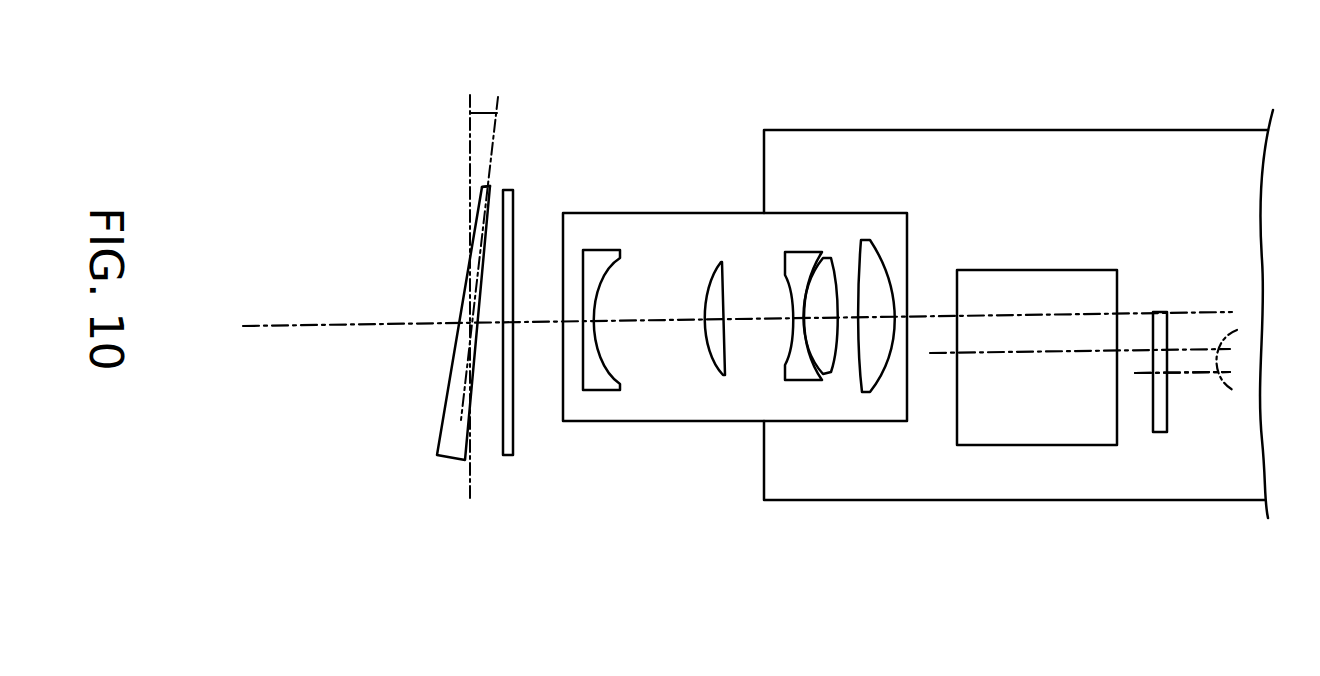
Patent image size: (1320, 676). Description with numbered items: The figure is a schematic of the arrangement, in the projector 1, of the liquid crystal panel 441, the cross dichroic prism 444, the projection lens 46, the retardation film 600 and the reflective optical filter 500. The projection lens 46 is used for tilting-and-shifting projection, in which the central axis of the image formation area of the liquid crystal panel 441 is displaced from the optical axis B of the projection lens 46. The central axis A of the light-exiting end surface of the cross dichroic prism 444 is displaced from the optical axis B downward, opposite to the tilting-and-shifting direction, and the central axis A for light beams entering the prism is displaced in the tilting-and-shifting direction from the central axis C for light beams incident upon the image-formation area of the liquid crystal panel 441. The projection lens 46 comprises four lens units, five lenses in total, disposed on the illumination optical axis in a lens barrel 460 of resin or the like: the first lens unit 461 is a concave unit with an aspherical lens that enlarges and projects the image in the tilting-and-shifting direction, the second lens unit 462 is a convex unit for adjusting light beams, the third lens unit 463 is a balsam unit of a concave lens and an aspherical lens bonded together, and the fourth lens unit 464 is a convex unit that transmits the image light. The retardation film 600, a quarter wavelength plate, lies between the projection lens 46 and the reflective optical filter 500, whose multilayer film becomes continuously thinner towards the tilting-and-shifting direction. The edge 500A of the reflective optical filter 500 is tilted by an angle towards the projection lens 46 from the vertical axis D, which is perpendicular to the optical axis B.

The projector 1 is at (977, 145).
The projection lens 46 is at (740, 368).
The lens barrel 460 is at (655, 421).
The first lens unit 461 is at (602, 383).
The second lens unit 462 is at (718, 374).
The third lens unit 463 is at (802, 372).
The fourth lens unit 464 is at (867, 392).
The cross dichroic prism 444 is at (1032, 445).
The liquid crystal panel 441 is at (1155, 432).
The reflective optical filter 500 is at (447, 462).
The edge 500A is at (490, 184).
The retardation film 600 is at (505, 192).
The central axis A is at (1237, 330).
The optical axis B is at (305, 326).
The central axis C is at (1235, 391).
The vertical axis D is at (478, 462).